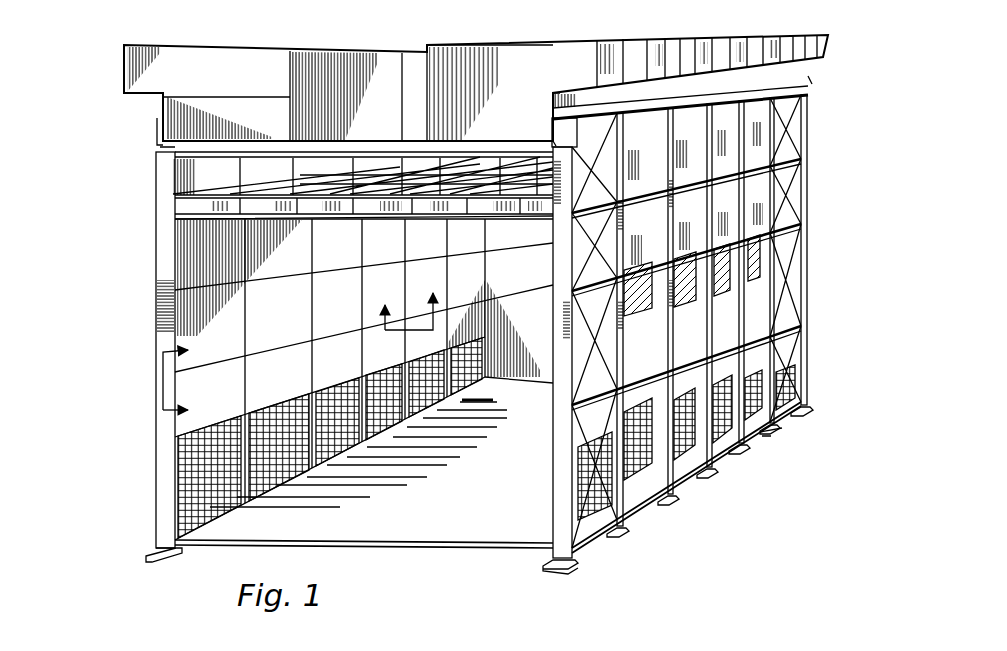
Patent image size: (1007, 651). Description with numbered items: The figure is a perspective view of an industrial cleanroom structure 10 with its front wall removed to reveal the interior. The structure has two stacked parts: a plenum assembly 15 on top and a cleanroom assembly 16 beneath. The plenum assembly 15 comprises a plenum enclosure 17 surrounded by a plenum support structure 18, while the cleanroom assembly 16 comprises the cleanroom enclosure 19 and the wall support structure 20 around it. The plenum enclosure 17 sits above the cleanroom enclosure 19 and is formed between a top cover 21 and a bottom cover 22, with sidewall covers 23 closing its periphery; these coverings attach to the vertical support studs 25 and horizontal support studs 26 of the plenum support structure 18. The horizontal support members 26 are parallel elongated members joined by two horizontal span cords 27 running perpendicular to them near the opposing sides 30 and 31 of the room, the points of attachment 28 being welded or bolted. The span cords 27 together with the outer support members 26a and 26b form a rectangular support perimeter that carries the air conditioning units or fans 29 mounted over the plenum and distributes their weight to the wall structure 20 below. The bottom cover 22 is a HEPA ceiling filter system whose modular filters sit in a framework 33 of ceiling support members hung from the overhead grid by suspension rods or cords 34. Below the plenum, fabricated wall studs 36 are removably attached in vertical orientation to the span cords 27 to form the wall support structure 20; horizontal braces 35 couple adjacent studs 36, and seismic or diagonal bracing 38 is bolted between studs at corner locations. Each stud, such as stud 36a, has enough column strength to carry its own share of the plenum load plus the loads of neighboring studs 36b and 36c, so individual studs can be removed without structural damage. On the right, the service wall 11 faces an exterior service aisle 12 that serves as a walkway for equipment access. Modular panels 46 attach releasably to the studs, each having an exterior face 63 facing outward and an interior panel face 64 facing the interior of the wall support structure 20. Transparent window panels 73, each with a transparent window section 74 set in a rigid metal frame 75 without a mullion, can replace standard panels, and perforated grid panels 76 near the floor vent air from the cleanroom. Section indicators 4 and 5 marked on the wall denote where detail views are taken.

The industrial cleanroom structure 10 is at (135, 246).
The service wall 11 is at (807, 190).
The exterior service aisle 12 is at (762, 463).
The plenum assembly 15 is at (72, 38).
The cleanroom assembly 16 is at (72, 216).
The plenum enclosure 17 is at (408, 165).
The plenum support structure 18 is at (150, 153).
The cleanroom enclosure 19 is at (200, 243).
The wall support structure 20 is at (150, 301).
The top cover 21 is at (245, 165).
The bottom cover 22 is at (383, 165).
The sidewall covers 23 is at (400, 177).
The vertical support studs 25 is at (626, 165).
The horizontal support members 26 is at (760, 113).
The outer support member 26a is at (500, 147).
The outer support member 26b is at (790, 103).
The horizontal span cords 27 is at (160, 141).
The points of attachment 28 is at (158, 151).
The air conditioning units or fans 29 is at (368, 62).
The side of the cleanroom 30 is at (155, 548).
The side of the cleanroom 31 is at (553, 557).
The ceiling support framework 33 is at (503, 218).
The suspension rods or cords 34 is at (240, 177).
The horizontal braces 35 is at (629, 250).
The fabricated wall studs 36 is at (545, 322).
The wall stud 36a is at (742, 437).
The wall stud 36b is at (772, 418).
The wall stud 36c is at (670, 487).
The diagonal bracing 38 is at (585, 398).
The wall panels 46 is at (378, 357).
The exterior panel face 63 is at (364, 359).
The interior panel face 64 is at (715, 301).
The transparent window panels 73 is at (748, 272).
The transparent window section 74 is at (765, 263).
The rigid metal frame 75 is at (757, 312).
The perforated grid panels 76 is at (632, 487).
The section line 4 is at (183, 380).
The section line 5 is at (407, 300).